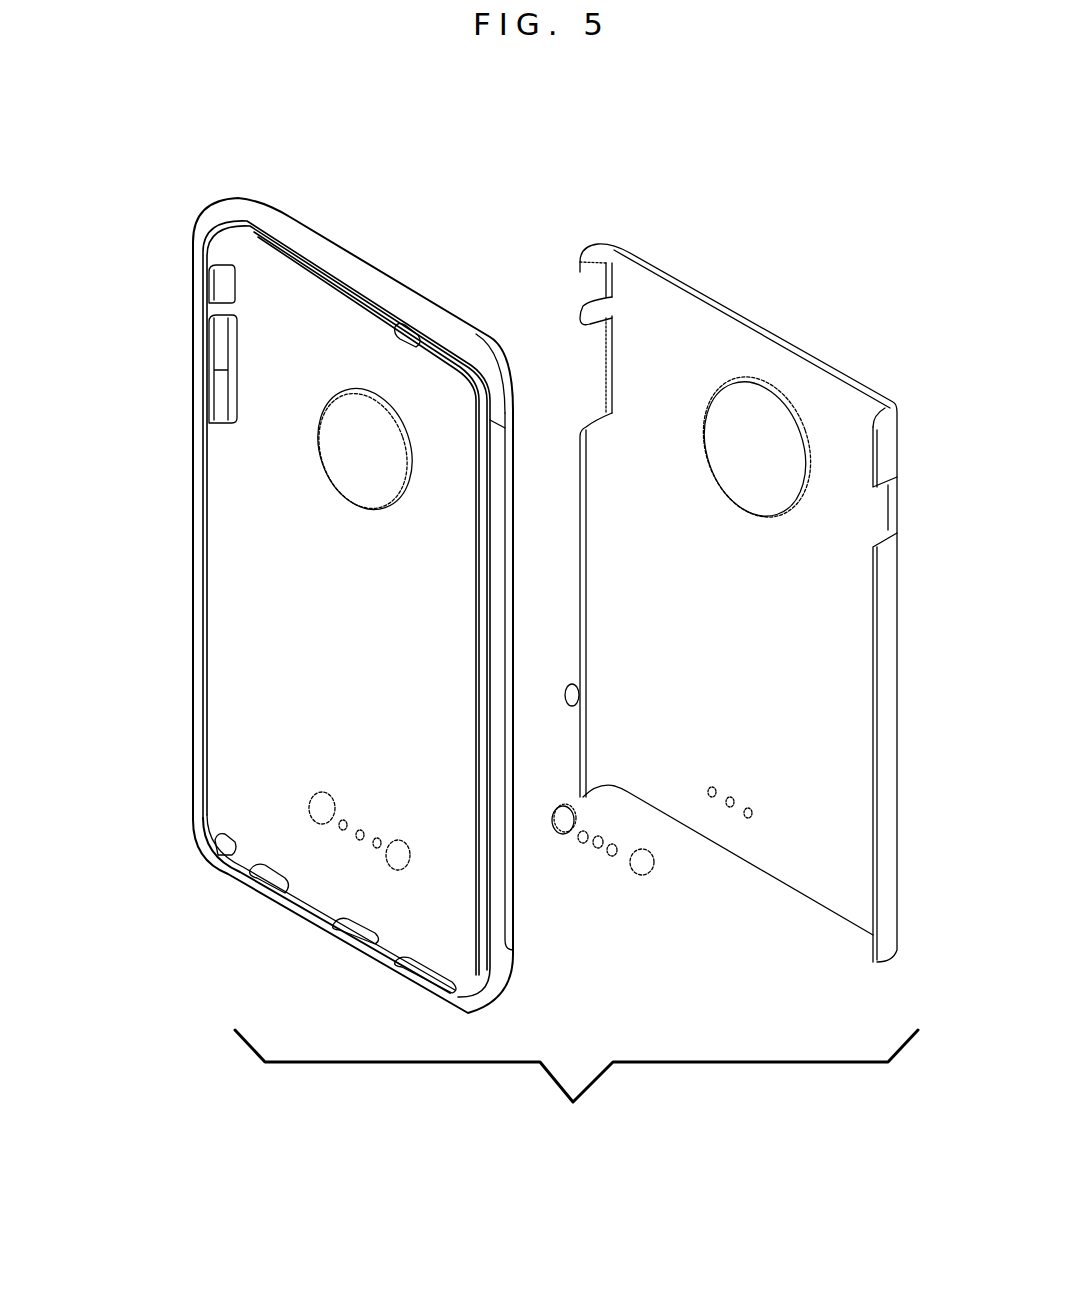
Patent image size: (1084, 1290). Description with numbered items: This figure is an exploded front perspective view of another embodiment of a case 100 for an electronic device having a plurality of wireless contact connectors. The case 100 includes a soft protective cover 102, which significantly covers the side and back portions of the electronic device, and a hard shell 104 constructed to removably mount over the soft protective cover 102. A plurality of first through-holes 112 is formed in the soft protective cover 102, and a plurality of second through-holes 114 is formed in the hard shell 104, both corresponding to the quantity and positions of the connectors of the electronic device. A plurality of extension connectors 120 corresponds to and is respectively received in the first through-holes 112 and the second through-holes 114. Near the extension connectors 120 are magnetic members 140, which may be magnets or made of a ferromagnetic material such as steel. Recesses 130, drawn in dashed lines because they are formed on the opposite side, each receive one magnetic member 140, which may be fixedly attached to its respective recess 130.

The case 100 is at (610, 1165).
The soft protective cover 102 is at (338, 260).
The hard shell 104 is at (750, 317).
The first through-holes 112 is at (374, 845).
The second through-holes 114 is at (748, 815).
The extension connectors 120 is at (617, 855).
The recesses 130 is at (410, 847).
The magnetic members 140 is at (637, 865).